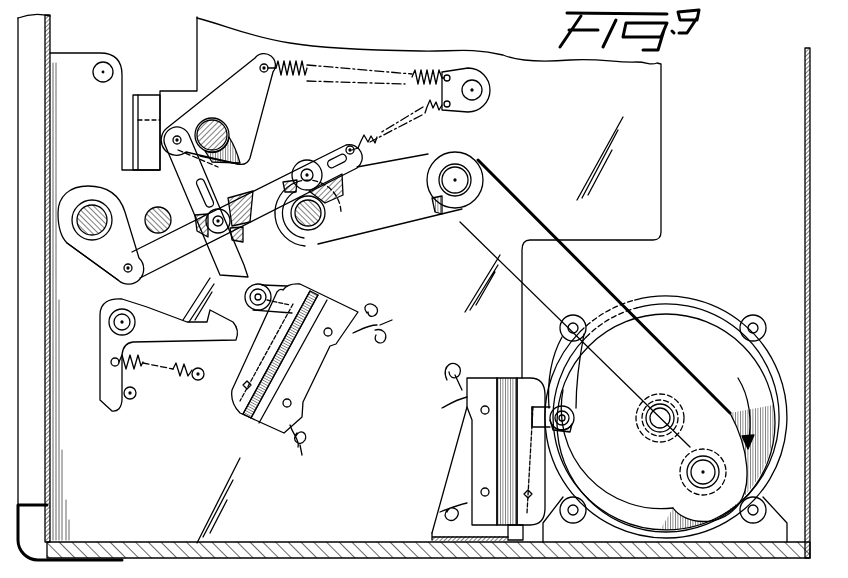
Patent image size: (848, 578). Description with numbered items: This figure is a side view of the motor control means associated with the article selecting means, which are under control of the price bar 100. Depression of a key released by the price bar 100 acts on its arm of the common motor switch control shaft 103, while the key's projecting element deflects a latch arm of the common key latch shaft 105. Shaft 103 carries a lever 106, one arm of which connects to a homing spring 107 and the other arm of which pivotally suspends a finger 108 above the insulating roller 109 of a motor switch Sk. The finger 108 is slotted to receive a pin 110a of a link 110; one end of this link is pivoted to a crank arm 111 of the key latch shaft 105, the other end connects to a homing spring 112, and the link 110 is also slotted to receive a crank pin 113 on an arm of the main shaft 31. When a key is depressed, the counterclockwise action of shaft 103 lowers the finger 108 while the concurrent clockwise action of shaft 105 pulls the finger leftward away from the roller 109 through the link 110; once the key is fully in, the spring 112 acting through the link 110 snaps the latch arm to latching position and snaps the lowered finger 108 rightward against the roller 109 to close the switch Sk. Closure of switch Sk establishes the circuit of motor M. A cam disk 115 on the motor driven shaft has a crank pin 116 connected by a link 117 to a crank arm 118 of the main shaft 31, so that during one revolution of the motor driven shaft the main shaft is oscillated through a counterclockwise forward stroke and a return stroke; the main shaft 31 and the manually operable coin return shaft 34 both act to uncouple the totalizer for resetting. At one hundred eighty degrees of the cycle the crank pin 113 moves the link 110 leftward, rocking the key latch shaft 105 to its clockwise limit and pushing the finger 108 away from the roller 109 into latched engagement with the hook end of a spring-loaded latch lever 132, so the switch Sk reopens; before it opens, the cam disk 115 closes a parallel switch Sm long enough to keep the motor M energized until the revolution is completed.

The price bar 100 is at (133, 97).
The motor switch control shaft 103 is at (215, 130).
The key latch shaft 105 is at (91, 201).
The lever 106 is at (257, 98).
The homing spring 107 is at (403, 82).
The finger 108 is at (212, 183).
The insulating roller 109 is at (263, 286).
The link 110 is at (273, 180).
The pin 110a is at (213, 240).
The crank arm 111 is at (98, 262).
The homing spring 112 is at (393, 128).
The crank pin 113 is at (307, 172).
The cam disk 115 is at (577, 373).
The crank pin 116 is at (691, 471).
The link 117 is at (597, 283).
The crank arm 118 is at (411, 228).
The spring-loaded latch lever 132 is at (105, 342).
The main shaft 31 is at (322, 222).
The coin return shaft 34 is at (155, 208).
The motor M is at (683, 300).
The motor switch Sk is at (297, 285).
The parallel switch Sm is at (502, 377).